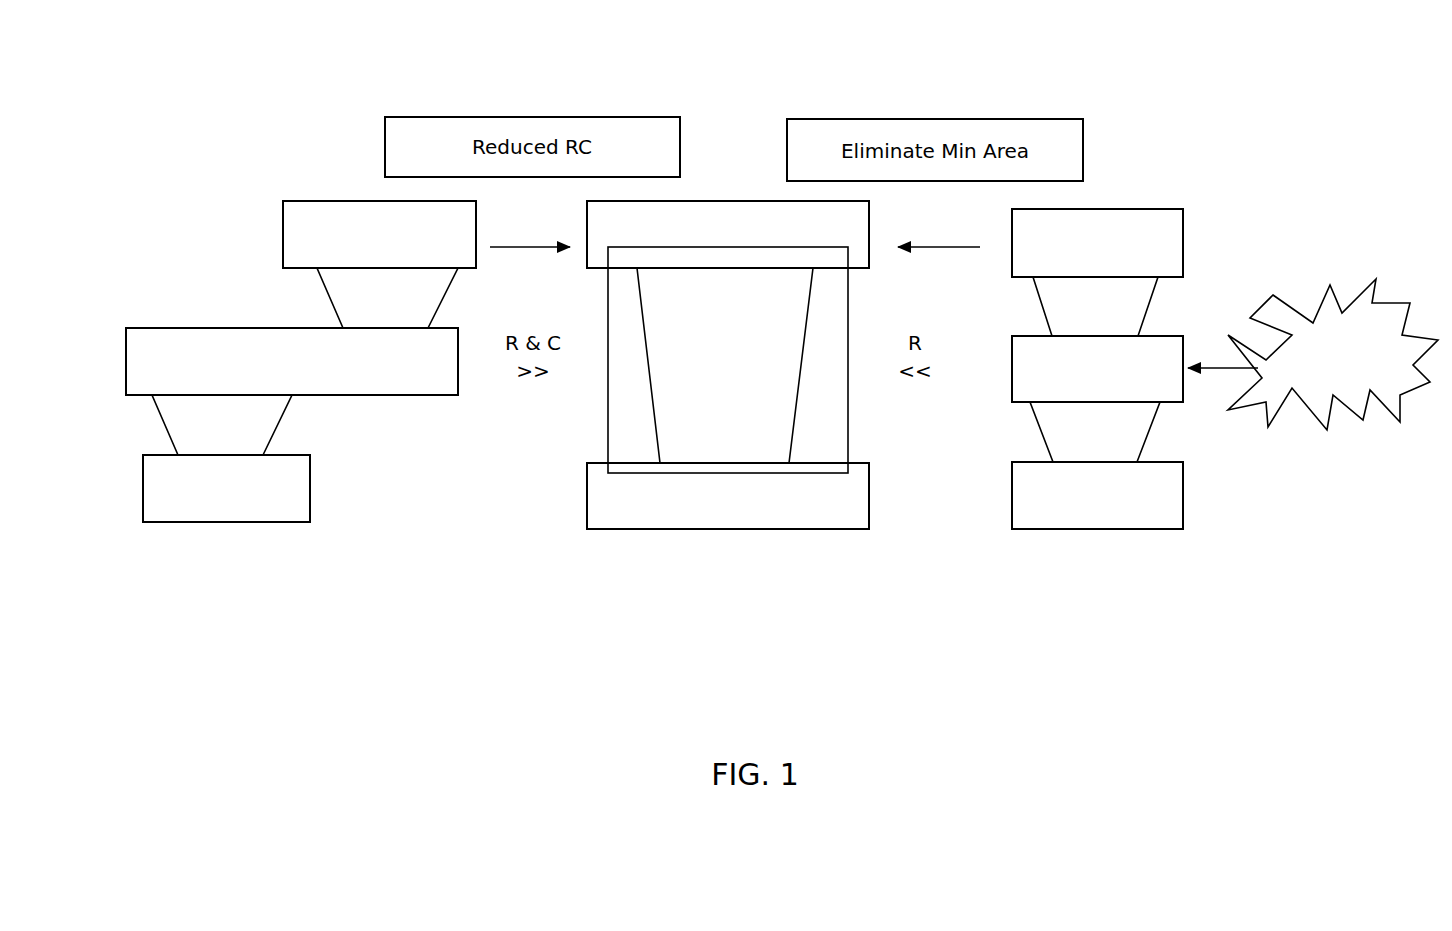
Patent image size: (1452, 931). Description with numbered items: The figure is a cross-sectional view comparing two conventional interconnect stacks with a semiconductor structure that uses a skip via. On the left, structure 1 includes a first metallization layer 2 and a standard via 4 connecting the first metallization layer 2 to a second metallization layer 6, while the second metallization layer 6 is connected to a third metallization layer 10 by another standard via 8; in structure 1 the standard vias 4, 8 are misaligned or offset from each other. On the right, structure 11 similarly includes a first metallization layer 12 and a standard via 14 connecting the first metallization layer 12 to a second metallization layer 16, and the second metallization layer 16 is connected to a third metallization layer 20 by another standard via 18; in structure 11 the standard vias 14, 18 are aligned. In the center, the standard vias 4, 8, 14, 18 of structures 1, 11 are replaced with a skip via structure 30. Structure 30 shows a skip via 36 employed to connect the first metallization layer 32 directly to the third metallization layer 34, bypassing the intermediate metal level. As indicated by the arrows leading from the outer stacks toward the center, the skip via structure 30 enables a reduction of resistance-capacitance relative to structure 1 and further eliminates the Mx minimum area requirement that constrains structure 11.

The structure 1 is at (321, 104).
The first metallization layer 2 is at (143, 482).
The standard via 4 is at (170, 426).
The second metallization layer 6 is at (126, 356).
The standard via 8 is at (332, 298).
The third metallization layer 10 is at (283, 228).
The structure 11 is at (1169, 154).
The first metallization layer 12 is at (1183, 498).
The standard via 14 is at (1143, 451).
The second metallization layer 16 is at (1183, 350).
The standard via 18 is at (1147, 311).
The third metallization layer 20 is at (1183, 243).
The skip via structure 30 is at (719, 124).
The first metallization layer 32 is at (869, 493).
The third metallization layer 34 is at (869, 223).
The skip via 36 is at (803, 357).